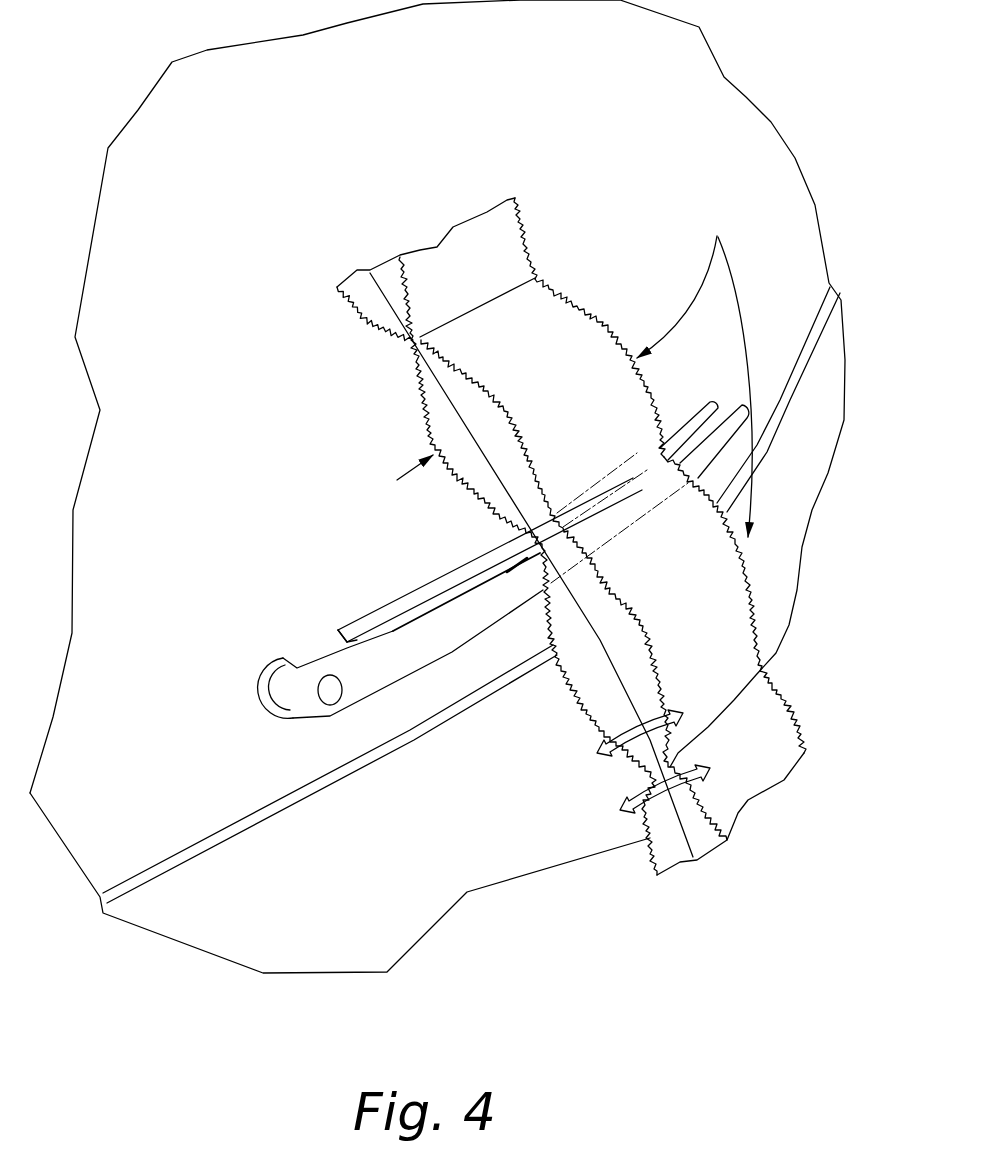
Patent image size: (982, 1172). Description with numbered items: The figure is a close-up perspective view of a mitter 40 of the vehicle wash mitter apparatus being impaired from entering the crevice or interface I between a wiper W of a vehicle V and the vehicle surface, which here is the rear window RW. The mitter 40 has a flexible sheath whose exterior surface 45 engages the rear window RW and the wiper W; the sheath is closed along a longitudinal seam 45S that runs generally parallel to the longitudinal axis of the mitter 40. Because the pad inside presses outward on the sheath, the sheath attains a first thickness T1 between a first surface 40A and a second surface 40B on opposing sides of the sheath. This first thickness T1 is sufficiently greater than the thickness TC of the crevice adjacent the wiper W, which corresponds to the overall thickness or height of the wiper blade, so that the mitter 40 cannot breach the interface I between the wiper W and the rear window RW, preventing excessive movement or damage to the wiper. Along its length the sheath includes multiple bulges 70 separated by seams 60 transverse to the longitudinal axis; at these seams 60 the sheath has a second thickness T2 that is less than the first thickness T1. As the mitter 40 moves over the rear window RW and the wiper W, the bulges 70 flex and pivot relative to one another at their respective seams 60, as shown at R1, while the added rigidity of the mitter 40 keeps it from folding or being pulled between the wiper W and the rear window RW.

The mitter 40 is at (531, 243).
The first surface 40A is at (569, 337).
The second surface 40B is at (423, 386).
The bulges 70 is at (694, 374).
The seams 60 is at (633, 477).
The exterior surface 45 is at (698, 600).
The longitudinal seam 45S is at (608, 665).
The first thickness T1 is at (513, 407).
The second thickness T2 is at (488, 580).
The crevice thickness TC is at (457, 563).
The interface I is at (353, 620).
The wiper W is at (377, 670).
The flexing and pivoting of bulges R1 is at (649, 761).
The vehicle V is at (458, 870).
The rear window RW is at (192, 357).